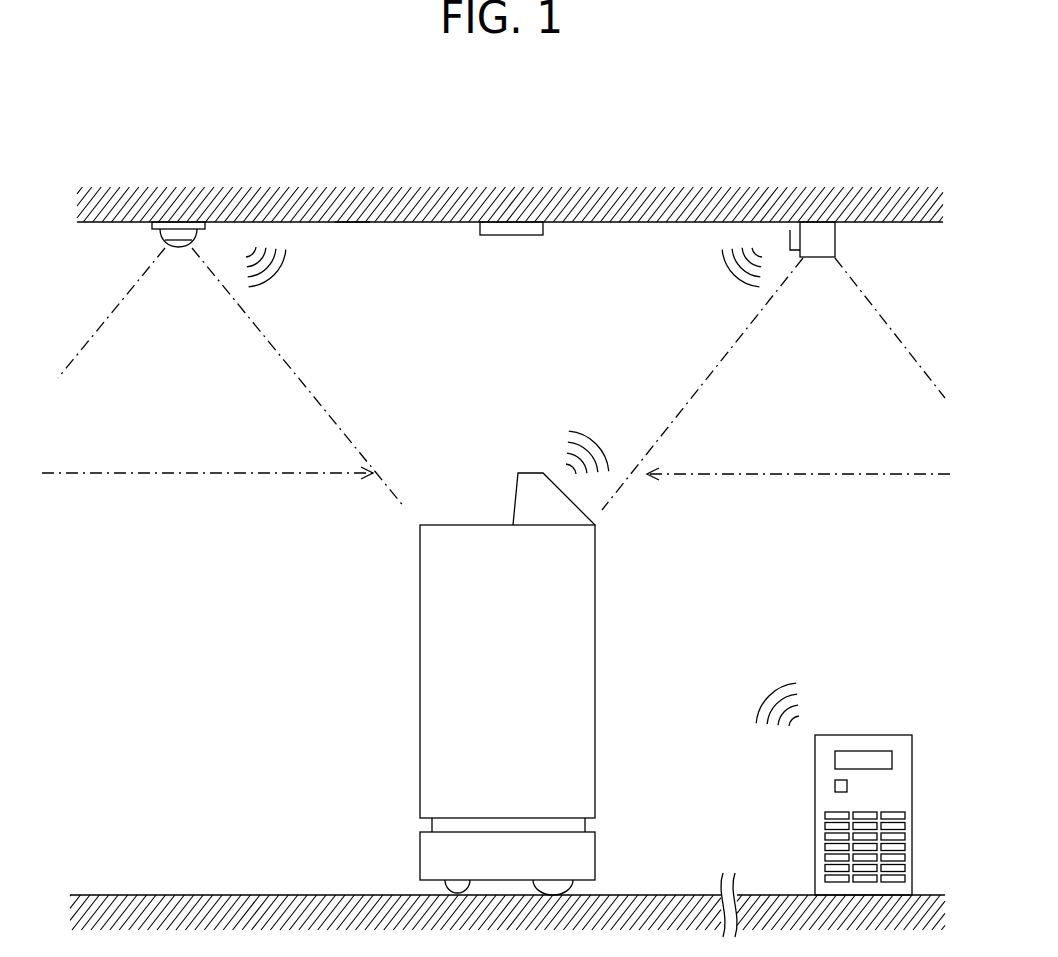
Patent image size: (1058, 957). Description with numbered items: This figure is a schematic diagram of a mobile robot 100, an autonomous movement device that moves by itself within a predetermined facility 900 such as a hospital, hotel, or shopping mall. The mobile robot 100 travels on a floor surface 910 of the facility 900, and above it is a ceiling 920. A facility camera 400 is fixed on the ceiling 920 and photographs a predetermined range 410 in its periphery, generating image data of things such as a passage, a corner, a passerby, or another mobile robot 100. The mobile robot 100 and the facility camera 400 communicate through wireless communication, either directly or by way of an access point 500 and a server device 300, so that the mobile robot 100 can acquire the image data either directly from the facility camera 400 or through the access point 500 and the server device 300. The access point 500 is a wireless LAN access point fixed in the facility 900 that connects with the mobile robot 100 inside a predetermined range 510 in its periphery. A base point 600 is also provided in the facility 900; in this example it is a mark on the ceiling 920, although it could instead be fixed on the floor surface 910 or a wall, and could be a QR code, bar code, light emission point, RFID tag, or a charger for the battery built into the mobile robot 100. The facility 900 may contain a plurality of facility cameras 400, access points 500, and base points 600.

The mobile robot 100 is at (662, 566).
The server device 300 is at (893, 735).
The facility camera 400 is at (160, 232).
The predetermined range 410 is at (207, 488).
The access point 500 is at (828, 240).
The predetermined range 510 is at (798, 489).
The base point 600 is at (518, 228).
The predetermined facility 900 is at (277, 184).
The floor surface 910 is at (350, 895).
The ceiling 920 is at (352, 222).